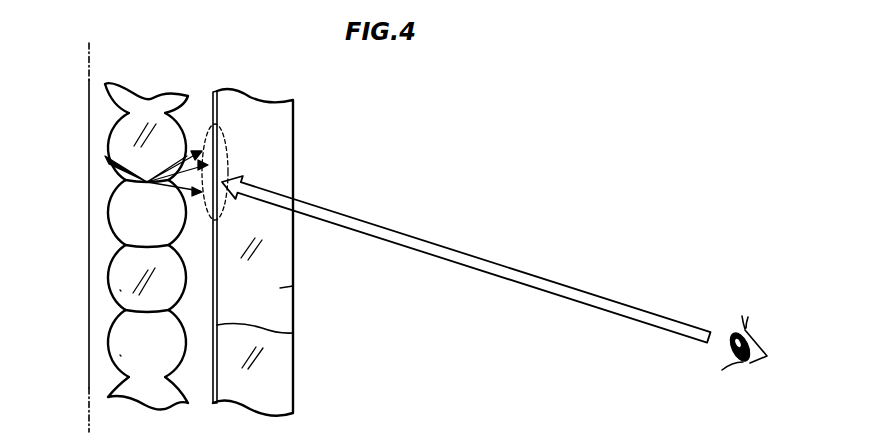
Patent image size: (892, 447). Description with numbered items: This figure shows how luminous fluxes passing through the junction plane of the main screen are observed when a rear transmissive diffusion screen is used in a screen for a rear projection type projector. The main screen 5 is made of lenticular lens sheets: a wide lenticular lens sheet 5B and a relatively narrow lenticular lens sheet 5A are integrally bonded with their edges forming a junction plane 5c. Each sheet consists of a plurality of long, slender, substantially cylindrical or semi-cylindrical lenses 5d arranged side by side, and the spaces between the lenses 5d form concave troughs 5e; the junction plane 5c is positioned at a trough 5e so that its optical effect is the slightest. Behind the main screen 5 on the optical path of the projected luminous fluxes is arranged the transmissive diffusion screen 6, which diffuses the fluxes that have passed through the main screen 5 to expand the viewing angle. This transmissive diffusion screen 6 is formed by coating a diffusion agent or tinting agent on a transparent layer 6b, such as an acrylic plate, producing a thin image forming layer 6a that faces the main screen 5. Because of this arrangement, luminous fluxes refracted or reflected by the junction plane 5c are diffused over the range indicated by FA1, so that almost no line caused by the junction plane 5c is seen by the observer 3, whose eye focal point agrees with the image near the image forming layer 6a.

The main screen 5 is at (148, 100).
The lenticular lens sheet 5A is at (96, 182).
The lenticular lens sheet 5B is at (89, 285).
The junction plane 5c is at (142, 184).
The concave trough 5e is at (123, 247).
The lens 5d is at (120, 355).
The transmissive diffusion screen 6 is at (267, 117).
The image forming layer 6a is at (293, 333).
The transparent layer 6b is at (293, 286).
The diffusion range FA1 is at (228, 152).
The observer 3 is at (757, 360).